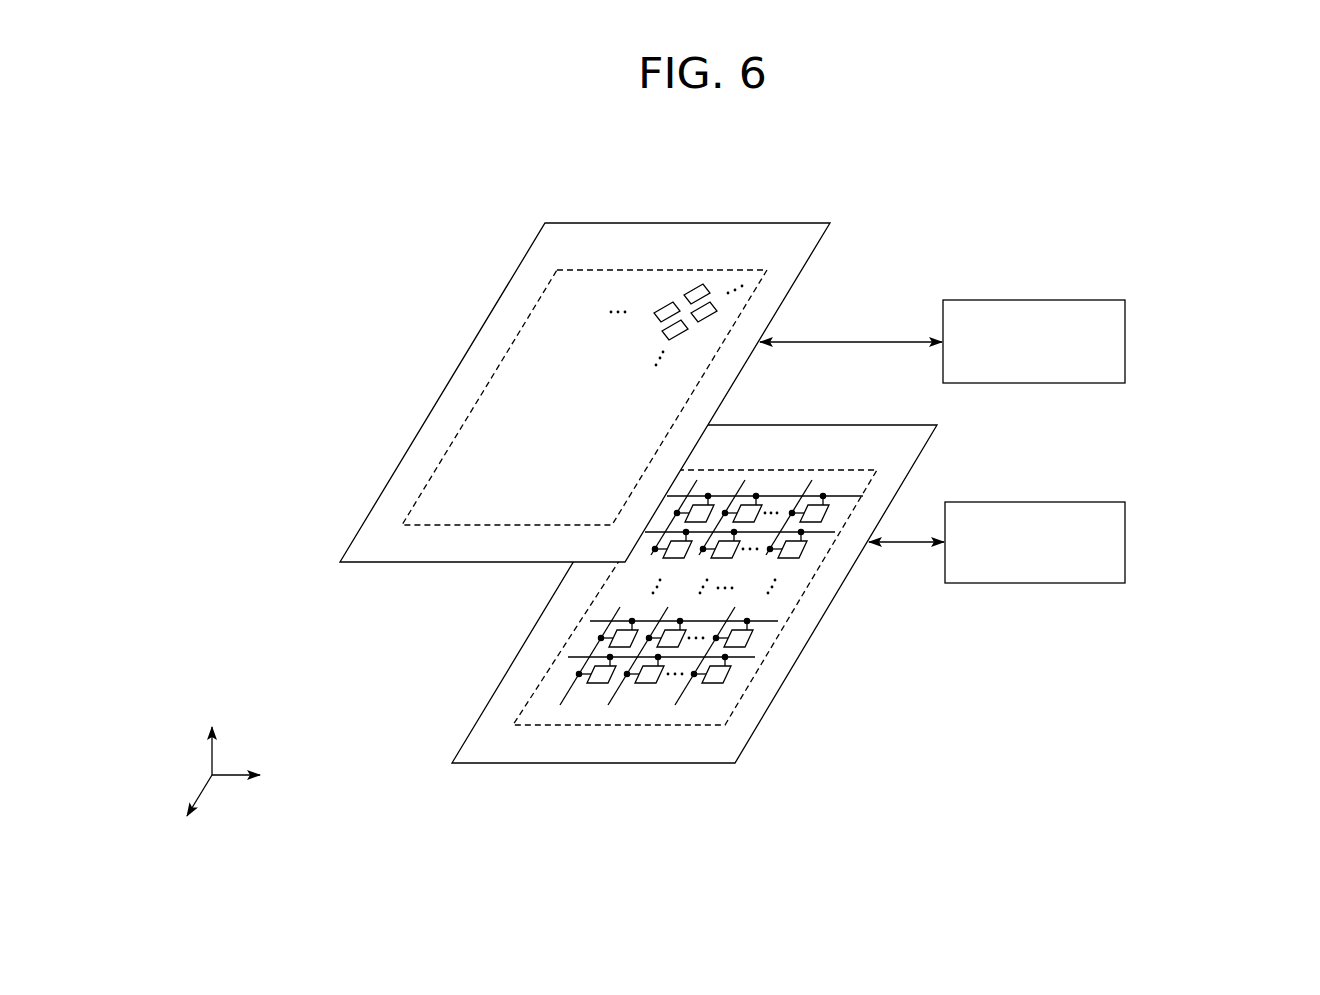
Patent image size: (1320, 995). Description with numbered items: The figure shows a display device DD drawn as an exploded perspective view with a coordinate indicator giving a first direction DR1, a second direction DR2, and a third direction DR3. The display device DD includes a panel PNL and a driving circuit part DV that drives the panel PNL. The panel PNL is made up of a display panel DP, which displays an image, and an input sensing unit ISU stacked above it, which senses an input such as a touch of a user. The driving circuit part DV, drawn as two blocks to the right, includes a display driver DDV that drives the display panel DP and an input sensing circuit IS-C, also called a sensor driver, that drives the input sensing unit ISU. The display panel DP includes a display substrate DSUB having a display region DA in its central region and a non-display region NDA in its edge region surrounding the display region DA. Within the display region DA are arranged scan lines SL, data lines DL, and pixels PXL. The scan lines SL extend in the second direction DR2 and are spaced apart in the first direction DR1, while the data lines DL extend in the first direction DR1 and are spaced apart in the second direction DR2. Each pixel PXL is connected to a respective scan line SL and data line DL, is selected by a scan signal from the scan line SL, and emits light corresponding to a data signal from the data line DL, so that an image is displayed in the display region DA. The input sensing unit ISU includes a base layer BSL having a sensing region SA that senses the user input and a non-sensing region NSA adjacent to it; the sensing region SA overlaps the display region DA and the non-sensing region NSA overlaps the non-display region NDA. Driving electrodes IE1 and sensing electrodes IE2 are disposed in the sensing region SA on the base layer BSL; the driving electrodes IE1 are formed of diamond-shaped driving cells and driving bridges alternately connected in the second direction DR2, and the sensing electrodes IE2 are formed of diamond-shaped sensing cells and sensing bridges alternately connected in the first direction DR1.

The display device DD is at (1124, 201).
The panel PNL is at (412, 593).
The input sensing unit ISU is at (488, 565).
The display panel DP is at (496, 678).
The base layer BSL is at (420, 430).
The sensing region SA is at (726, 264).
The non-sensing region NSA is at (776, 295).
The driving electrodes IE1 is at (662, 305).
The sensing electrodes IE2 is at (664, 332).
The display substrate DSUB is at (784, 683).
The display region DA is at (836, 462).
The non-display region NDA is at (880, 497).
The pixels PXL is at (805, 547).
The scan lines SL is at (778, 621).
The data lines DL is at (686, 690).
The input sensing circuit IS-C is at (1125, 342).
The display driver DDV is at (1125, 542).
The driving circuit part DV is at (1213, 333).
The first direction DR1 is at (182, 811).
The second direction DR2 is at (256, 777).
The third direction DR3 is at (211, 736).